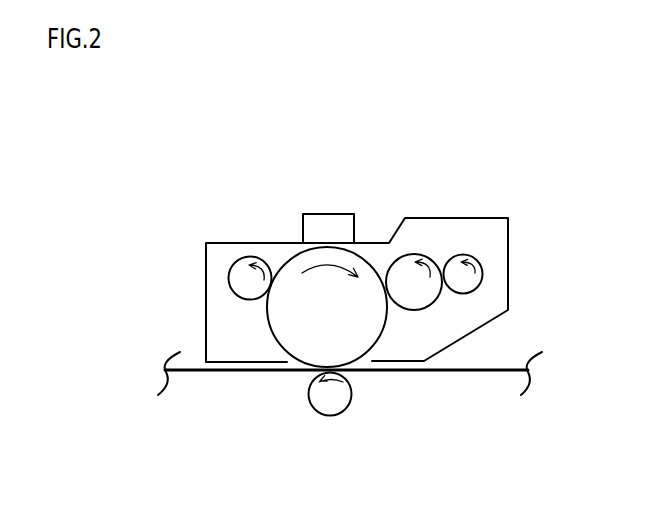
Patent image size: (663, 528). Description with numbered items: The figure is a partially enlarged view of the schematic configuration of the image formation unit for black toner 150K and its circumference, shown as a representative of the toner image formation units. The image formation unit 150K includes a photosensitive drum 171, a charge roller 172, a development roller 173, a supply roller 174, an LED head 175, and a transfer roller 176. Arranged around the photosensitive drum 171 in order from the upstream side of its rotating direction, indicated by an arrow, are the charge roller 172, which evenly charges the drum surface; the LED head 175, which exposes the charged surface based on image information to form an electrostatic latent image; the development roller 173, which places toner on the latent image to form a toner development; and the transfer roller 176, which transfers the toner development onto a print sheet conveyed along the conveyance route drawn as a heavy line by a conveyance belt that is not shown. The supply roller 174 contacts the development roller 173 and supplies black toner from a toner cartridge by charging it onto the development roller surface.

The image formation unit for black (K) 150K is at (413, 160).
The photosensitive drum 171 is at (282, 342).
The charge roller 172 is at (237, 278).
The development roller 173 is at (418, 256).
The supply roller 174 is at (478, 258).
The LED head 175 is at (327, 213).
The transfer roller 176 is at (338, 408).